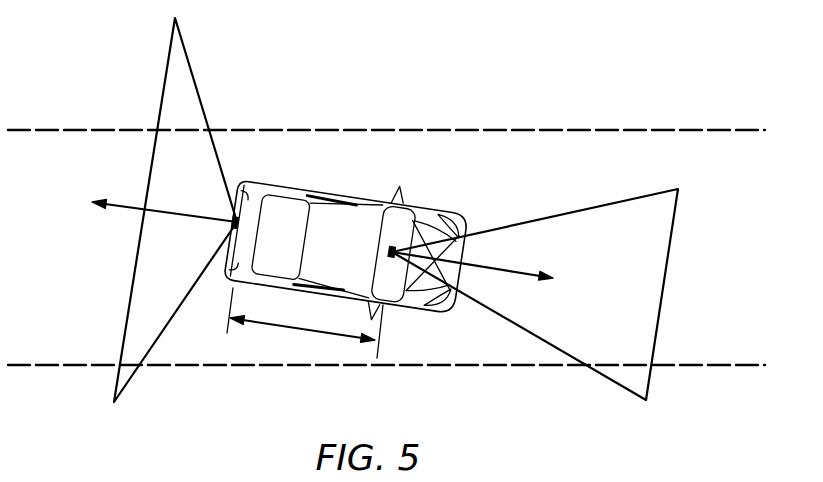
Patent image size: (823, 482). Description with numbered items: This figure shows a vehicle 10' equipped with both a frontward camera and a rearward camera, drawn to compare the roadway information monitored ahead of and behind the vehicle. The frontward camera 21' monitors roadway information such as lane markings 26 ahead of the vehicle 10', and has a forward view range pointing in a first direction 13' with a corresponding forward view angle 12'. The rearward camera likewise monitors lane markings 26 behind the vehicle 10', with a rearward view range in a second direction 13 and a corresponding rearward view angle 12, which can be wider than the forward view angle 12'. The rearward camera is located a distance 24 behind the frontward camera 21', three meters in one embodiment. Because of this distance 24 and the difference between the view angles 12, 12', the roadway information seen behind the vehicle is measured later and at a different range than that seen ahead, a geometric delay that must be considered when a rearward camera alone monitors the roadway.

The vehicle 10' is at (339, 248).
The rearward view angle 12 is at (175, 212).
The forward view angle 12' is at (535, 307).
The second direction 13 is at (155, 251).
The first direction 13' is at (472, 306).
The frontward camera 21' is at (404, 335).
The distance 24 is at (302, 330).
The lane markings 26 is at (112, 128).